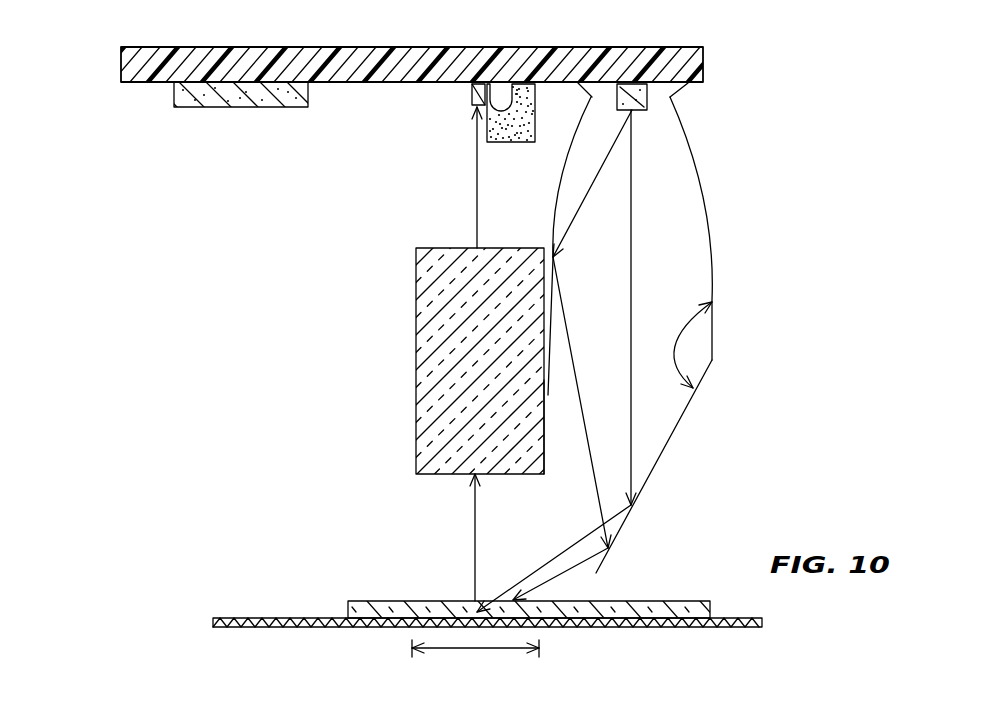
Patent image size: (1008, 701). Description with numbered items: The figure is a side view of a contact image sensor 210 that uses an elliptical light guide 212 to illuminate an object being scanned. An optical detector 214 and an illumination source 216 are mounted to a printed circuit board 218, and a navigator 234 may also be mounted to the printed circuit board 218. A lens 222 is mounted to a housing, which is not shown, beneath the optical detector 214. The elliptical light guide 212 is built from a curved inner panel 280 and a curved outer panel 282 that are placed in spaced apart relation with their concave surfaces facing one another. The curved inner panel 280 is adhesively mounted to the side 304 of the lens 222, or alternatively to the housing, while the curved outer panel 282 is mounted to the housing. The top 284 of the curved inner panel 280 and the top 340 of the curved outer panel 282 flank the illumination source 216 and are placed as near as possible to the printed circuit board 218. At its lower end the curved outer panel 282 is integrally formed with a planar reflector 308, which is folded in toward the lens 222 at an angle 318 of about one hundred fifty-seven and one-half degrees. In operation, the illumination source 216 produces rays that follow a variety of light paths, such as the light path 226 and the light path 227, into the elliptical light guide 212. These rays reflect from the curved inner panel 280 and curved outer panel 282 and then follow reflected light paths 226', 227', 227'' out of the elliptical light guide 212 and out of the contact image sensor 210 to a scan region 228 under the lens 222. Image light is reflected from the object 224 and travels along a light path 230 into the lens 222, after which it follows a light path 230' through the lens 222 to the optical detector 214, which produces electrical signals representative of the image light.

The contact image sensor 210 is at (150, 143).
The elliptical light guide 212 is at (728, 190).
The optical detector 214 is at (468, 94).
The illumination source 216 is at (694, 108).
The printed circuit board 218 is at (277, 47).
The lens 222 is at (416, 307).
The object 224 is at (730, 618).
The light path 226 is at (658, 307).
The reflected light path 226' is at (554, 558).
The light path 227 is at (592, 183).
The reflected light path 227' is at (585, 402).
The reflected light path 227'' is at (560, 558).
The scan region 228 is at (465, 650).
The light path 230 is at (449, 537).
The light path 230' is at (449, 177).
The navigator 234 is at (213, 107).
The curved inner panel 280 is at (563, 188).
The curved outer panel 282 is at (712, 244).
The top of curved inner panel 284 is at (576, 83).
The side of lens 304 is at (546, 474).
The planar reflector 308 is at (665, 448).
The angle 318 is at (677, 362).
The top of curved outer panel 340 is at (687, 83).